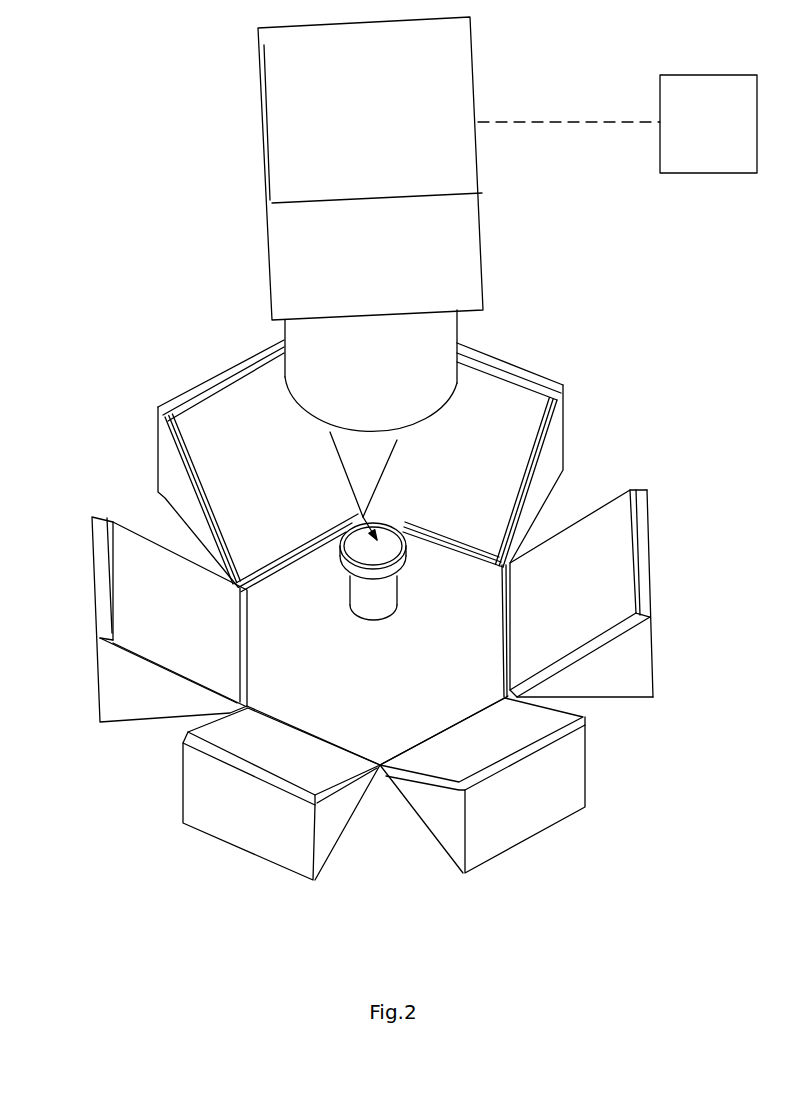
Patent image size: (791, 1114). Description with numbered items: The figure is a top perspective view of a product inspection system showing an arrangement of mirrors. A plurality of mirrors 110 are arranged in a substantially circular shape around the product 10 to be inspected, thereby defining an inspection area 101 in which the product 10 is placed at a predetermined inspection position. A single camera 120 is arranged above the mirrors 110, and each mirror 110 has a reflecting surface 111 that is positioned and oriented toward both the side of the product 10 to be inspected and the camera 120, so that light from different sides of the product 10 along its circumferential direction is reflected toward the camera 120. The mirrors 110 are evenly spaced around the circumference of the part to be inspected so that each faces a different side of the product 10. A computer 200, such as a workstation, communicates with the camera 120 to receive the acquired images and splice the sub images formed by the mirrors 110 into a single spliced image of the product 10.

The computer 200 is at (617, 124).
The camera 120 is at (253, 258).
The product 10 is at (362, 515).
The reflecting surface 111 is at (480, 457).
The mirrors 110 is at (180, 789).
The inspection area 101 is at (380, 678).